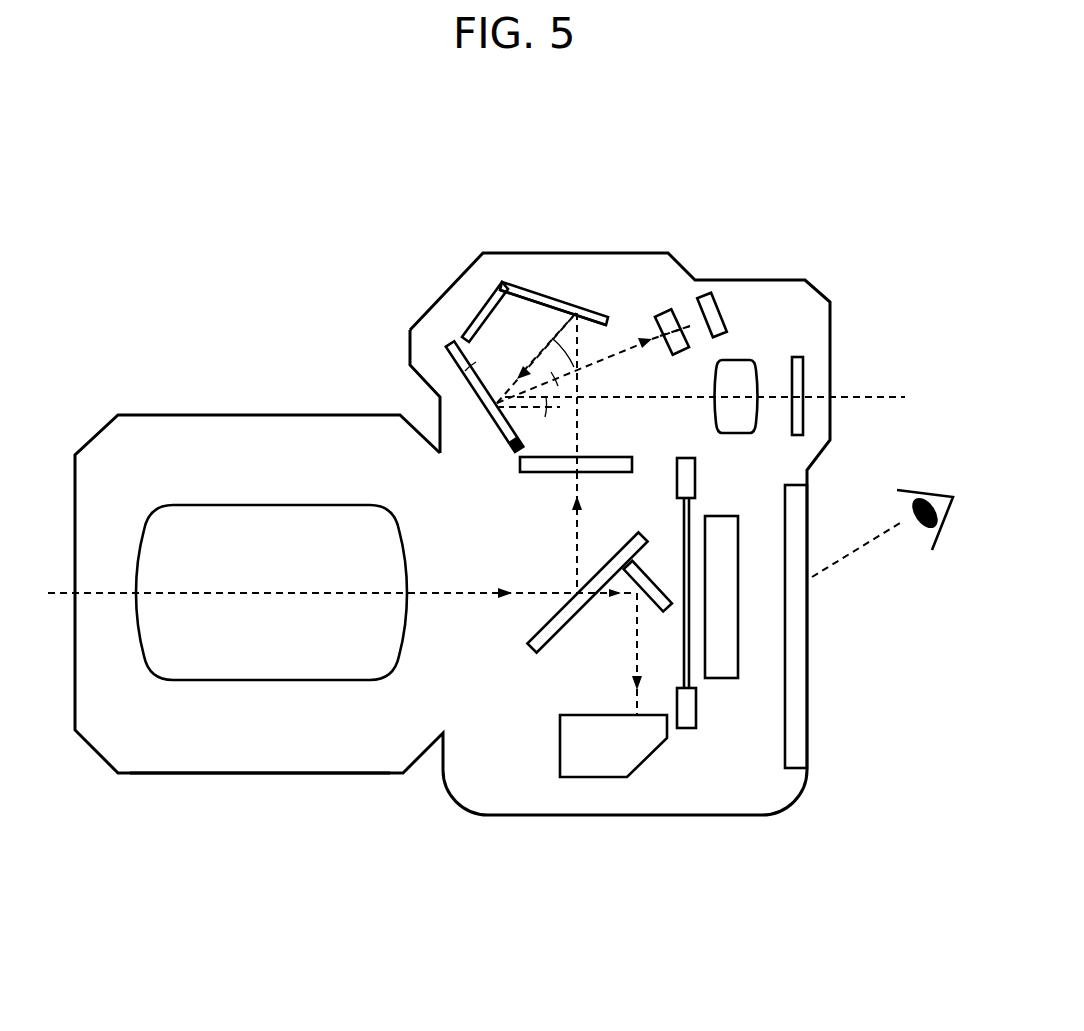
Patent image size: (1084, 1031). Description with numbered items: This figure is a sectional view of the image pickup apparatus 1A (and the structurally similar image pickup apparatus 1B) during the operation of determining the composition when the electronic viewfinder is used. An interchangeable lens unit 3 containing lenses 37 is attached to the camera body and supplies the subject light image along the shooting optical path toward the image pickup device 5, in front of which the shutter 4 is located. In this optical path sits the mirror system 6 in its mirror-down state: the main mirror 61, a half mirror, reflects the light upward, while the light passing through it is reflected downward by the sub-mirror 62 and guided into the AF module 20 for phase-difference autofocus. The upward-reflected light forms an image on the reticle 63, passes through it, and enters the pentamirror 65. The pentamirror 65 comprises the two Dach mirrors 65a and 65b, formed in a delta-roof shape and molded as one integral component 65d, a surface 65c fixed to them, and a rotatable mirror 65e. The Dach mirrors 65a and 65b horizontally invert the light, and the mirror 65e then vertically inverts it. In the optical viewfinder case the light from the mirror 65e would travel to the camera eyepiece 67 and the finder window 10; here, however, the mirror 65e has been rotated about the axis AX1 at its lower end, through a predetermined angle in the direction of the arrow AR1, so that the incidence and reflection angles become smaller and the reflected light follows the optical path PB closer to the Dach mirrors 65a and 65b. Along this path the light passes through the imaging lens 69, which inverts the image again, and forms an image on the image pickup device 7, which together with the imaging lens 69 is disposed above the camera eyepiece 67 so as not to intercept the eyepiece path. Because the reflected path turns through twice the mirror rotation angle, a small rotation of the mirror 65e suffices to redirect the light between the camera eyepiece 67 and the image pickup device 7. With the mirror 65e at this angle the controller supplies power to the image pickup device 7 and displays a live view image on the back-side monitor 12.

The image pickup apparatus 1A is at (452, 459).
The image pickup apparatus 1B is at (452, 534).
The interchangeable lens unit 3 is at (261, 777).
The lenses 37 is at (272, 505).
The shutter 4 is at (686, 730).
The image pickup device 5 is at (725, 515).
The mirror system 6 is at (572, 614).
The main mirror 61 is at (538, 631).
The sub-mirror 62 is at (647, 583).
The reticle 63 is at (540, 472).
The pentamirror 65 is at (497, 235).
The Dach mirror 65a is at (556, 243).
The Dach mirror 65b is at (558, 300).
The surface 65c is at (477, 312).
The integral component 65d is at (542, 292).
The mirror 65e is at (442, 393).
The camera eyepiece 67 is at (753, 363).
The imaging lens 69 is at (655, 317).
The image pickup device 7 is at (727, 325).
The finder window 10 is at (810, 368).
The back-side monitor 12 is at (807, 624).
The AF module 20 is at (590, 778).
The arrow AR1 is at (433, 405).
The axis AX1 is at (518, 453).
The optical path PB is at (698, 320).